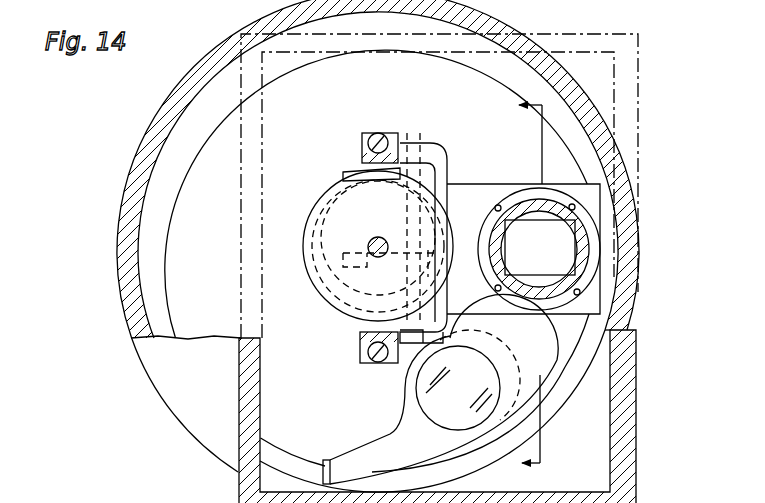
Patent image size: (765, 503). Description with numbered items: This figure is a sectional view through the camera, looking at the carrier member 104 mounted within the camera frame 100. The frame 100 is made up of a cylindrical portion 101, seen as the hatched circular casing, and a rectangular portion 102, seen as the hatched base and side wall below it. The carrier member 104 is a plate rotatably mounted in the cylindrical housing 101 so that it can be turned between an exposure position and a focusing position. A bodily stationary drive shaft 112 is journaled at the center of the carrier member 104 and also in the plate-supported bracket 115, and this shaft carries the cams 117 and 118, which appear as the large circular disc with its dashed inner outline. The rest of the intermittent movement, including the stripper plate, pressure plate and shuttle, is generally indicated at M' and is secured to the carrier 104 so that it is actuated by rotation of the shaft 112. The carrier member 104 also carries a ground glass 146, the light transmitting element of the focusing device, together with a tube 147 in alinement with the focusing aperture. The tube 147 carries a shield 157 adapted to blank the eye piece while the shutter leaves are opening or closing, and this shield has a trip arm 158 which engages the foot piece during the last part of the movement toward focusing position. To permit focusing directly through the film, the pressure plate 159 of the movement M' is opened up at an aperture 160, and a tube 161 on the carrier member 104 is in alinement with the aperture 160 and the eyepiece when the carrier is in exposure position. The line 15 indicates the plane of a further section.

The camera frame 100 is at (117, 206).
The cylindrical portion 101 is at (122, 292).
The rectangular portion 102 is at (632, 394).
The carrier member 104 is at (425, 186).
The drive shaft 112 is at (367, 247).
The bracket 115 is at (362, 157).
The cam 117 is at (330, 222).
The cam 118 is at (323, 291).
The ground glass 146 is at (458, 388).
The tube 147 is at (407, 386).
The shield 157 is at (447, 389).
The trip arm 158 is at (328, 460).
The pressure plate 159 is at (543, 218).
The aperture 160 is at (540, 247).
The tube 161 is at (497, 232).
The section line 15 is at (532, 295).
The intermittent movement M' is at (517, 170).